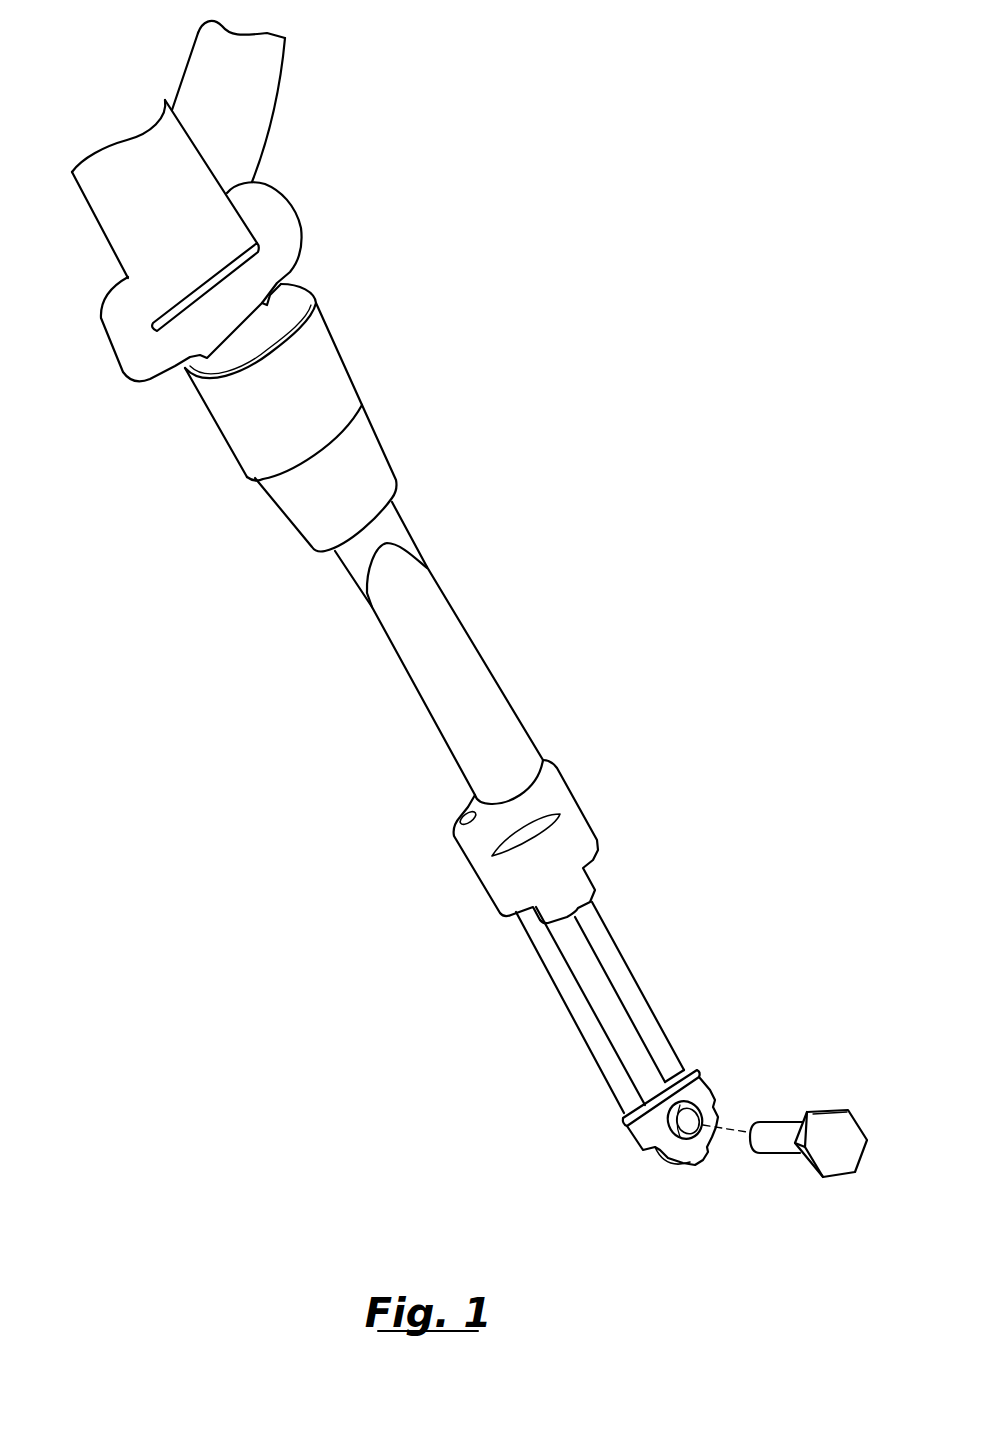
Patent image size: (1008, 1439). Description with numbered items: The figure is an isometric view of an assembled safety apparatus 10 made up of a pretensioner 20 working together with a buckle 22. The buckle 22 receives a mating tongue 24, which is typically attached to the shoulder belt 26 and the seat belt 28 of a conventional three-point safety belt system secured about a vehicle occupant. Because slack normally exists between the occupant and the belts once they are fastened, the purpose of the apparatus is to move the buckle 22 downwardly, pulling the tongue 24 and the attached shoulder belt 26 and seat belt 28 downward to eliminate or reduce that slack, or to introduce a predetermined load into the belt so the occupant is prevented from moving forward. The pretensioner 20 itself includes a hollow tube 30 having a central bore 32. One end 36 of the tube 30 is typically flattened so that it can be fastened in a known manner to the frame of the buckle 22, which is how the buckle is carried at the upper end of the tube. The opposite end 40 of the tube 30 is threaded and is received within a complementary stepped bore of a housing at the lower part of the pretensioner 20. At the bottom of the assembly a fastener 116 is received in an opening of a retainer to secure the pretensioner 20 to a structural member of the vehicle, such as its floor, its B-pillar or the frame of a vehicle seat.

The safety apparatus 10 is at (557, 353).
The pretensioner 20 is at (601, 815).
The buckle 22 is at (356, 343).
The tongue 24 is at (306, 215).
The shoulder belt 26 is at (248, 105).
The seat belt 28 is at (107, 200).
The hollow tube 30 is at (447, 620).
The central bore 32 is at (480, 710).
The end 36 is at (388, 532).
The opposite end 40 is at (528, 767).
The fastener 116 is at (840, 1103).